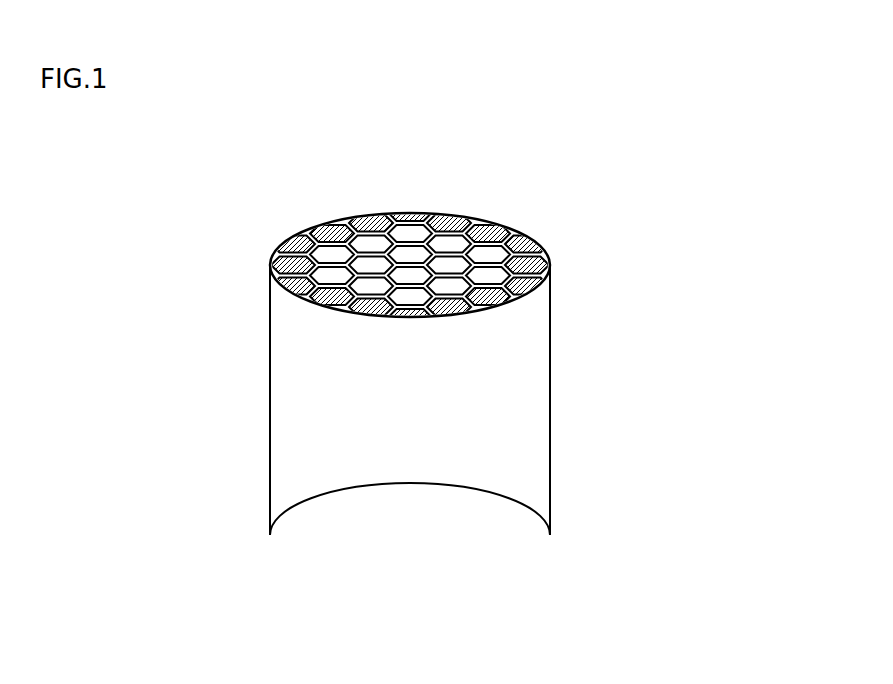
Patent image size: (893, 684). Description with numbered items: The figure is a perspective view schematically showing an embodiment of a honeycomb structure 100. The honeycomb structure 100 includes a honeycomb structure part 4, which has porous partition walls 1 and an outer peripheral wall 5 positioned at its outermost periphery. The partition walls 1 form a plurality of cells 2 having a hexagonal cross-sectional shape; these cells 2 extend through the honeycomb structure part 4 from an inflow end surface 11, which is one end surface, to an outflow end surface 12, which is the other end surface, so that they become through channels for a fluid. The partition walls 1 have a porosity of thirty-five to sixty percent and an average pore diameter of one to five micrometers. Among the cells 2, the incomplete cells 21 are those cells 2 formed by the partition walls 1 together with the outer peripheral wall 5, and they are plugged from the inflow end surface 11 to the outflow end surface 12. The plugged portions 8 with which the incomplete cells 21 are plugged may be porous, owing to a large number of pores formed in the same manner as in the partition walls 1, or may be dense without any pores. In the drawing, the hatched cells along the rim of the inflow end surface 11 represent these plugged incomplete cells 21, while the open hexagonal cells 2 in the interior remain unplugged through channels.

The honeycomb structure 100 is at (707, 117).
The honeycomb structure part 4 is at (565, 359).
The partition walls 1 is at (412, 243).
The cells 2 is at (367, 243).
The incomplete cells 21 is at (424, 238).
The plugged portions 8 is at (545, 253).
The inflow end surface 11 is at (272, 257).
The outflow end surface 12 is at (530, 563).
The outer peripheral wall 5 is at (300, 517).